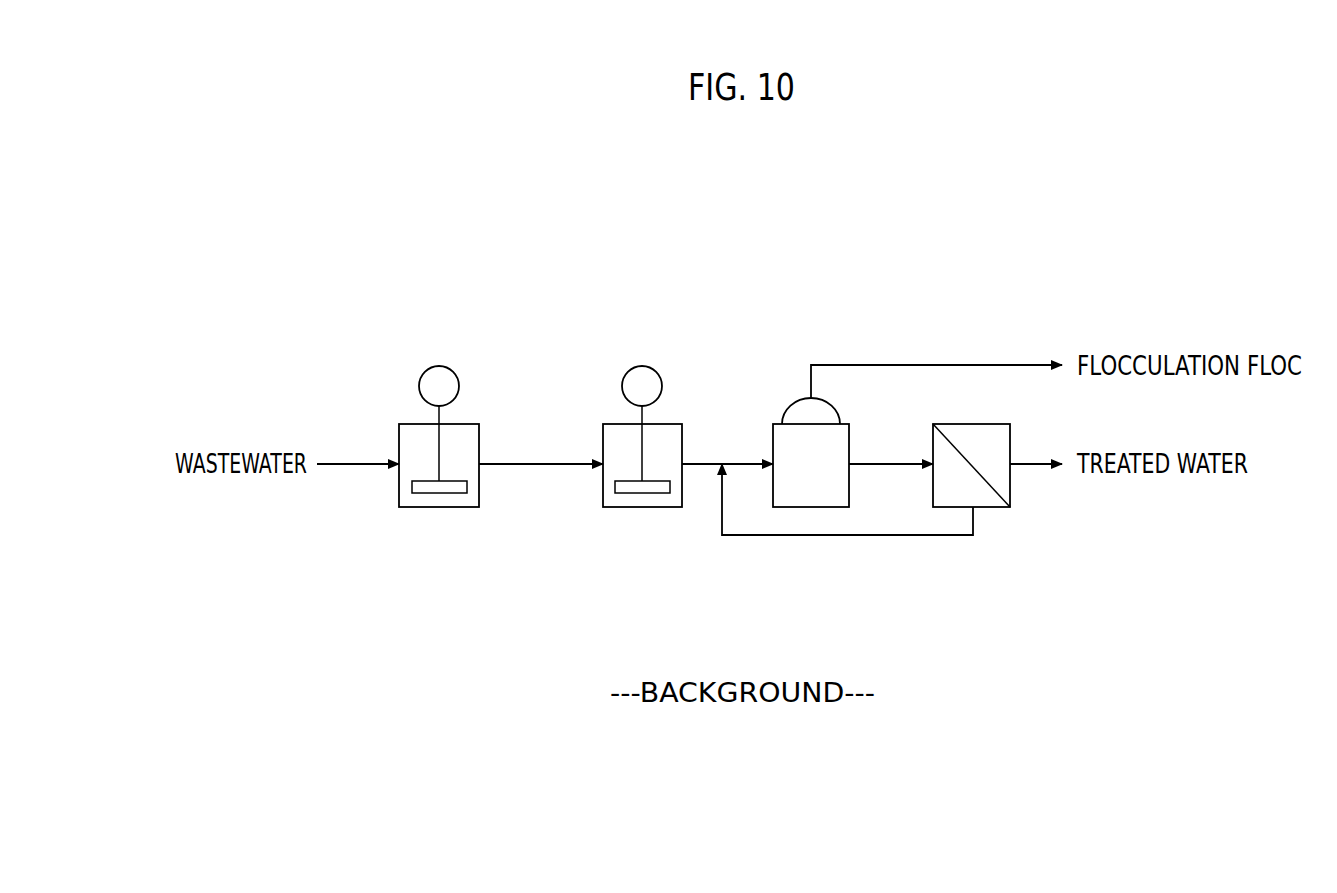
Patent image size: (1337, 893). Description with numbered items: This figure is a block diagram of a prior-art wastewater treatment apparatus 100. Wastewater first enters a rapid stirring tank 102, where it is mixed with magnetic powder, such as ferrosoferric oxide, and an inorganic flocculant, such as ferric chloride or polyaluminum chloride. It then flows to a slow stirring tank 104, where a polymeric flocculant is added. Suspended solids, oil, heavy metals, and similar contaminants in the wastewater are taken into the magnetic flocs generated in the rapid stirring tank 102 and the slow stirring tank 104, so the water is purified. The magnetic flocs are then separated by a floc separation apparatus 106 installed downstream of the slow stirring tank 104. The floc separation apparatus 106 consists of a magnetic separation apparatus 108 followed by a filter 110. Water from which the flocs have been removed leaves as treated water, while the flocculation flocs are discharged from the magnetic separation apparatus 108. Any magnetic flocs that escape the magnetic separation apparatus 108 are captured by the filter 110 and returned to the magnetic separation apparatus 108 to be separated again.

The wastewater treatment apparatus 100 is at (823, 315).
The rapid stirring tank 102 is at (439, 507).
The slow stirring tank 104 is at (642, 507).
The floc separation apparatus 106 is at (868, 540).
The magnetic separation apparatus 108 is at (851, 440).
The filter 110 is at (1010, 440).